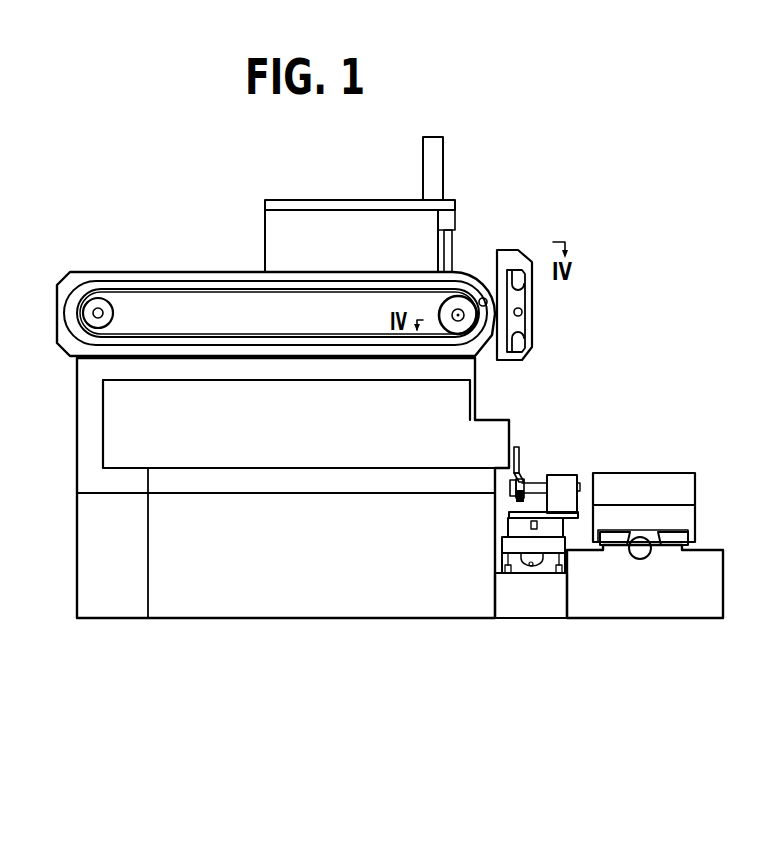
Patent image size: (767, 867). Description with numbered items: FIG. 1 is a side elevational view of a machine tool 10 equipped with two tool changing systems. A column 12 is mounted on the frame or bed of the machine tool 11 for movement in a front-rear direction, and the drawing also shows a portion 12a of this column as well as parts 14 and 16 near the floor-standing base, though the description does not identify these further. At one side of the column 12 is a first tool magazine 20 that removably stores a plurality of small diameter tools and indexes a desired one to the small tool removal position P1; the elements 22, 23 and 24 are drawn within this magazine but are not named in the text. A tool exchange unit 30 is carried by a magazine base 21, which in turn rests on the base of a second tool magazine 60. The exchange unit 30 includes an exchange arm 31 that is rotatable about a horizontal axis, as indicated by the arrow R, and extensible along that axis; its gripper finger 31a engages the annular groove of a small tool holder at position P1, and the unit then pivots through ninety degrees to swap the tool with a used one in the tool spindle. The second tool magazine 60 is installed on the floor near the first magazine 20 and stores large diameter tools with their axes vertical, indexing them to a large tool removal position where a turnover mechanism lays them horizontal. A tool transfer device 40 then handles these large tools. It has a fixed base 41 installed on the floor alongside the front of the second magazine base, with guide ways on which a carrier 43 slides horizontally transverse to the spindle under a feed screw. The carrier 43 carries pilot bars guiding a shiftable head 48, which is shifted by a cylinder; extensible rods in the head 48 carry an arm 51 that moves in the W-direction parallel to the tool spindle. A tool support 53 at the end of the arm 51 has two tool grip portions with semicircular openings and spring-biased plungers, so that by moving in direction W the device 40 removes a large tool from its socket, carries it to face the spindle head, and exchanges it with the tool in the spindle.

The machine tool 10 is at (507, 140).
The machine tool 11 is at (710, 577).
The column 12 is at (303, 223).
The feed block mounting portion 12a is at (352, 230).
The workpiece holder 14 is at (683, 517).
The holder upper block 16 is at (682, 480).
The first tool magazine 20 is at (165, 257).
The magazine base 21 is at (190, 285).
The drive roller 22 is at (450, 302).
The idler roller 23 is at (112, 315).
The conveyor belt 24 is at (243, 293).
The tool exchange unit 30 is at (541, 307).
The exchange arm 31 is at (518, 328).
The gripper finger 31a is at (509, 272).
The tool transfer device 40 is at (531, 466).
The fixed base 41 is at (527, 603).
The carrier 43 is at (512, 543).
The shiftable head 48 is at (568, 480).
The arm 51 is at (522, 468).
The tool support 53 is at (515, 447).
The second tool magazine 60 is at (98, 418).
The arrow R is at (516, 293).
The small tool removal position P1 is at (497, 300).
The W-direction W is at (507, 485).